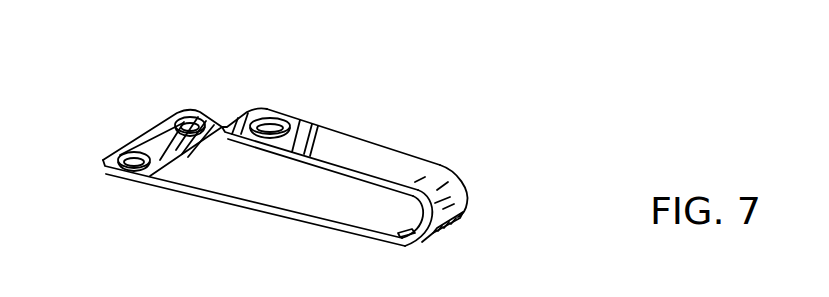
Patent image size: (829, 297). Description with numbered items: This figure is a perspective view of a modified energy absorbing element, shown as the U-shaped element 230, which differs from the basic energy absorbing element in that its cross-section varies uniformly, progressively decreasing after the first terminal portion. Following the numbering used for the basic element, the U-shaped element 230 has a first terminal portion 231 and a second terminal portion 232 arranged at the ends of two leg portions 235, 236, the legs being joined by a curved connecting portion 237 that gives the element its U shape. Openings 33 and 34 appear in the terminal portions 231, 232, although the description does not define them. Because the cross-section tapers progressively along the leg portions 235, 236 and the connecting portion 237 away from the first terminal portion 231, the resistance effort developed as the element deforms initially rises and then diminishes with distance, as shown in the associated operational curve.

The U-shaped element 230 is at (382, 131).
The first flap 231 is at (163, 140).
The second flap 232 is at (247, 120).
The holes 33 is at (188, 117).
The hole 34 is at (277, 120).
The lower leg 235 is at (333, 200).
The bent end 236 is at (395, 157).
The free end 237 is at (462, 216).